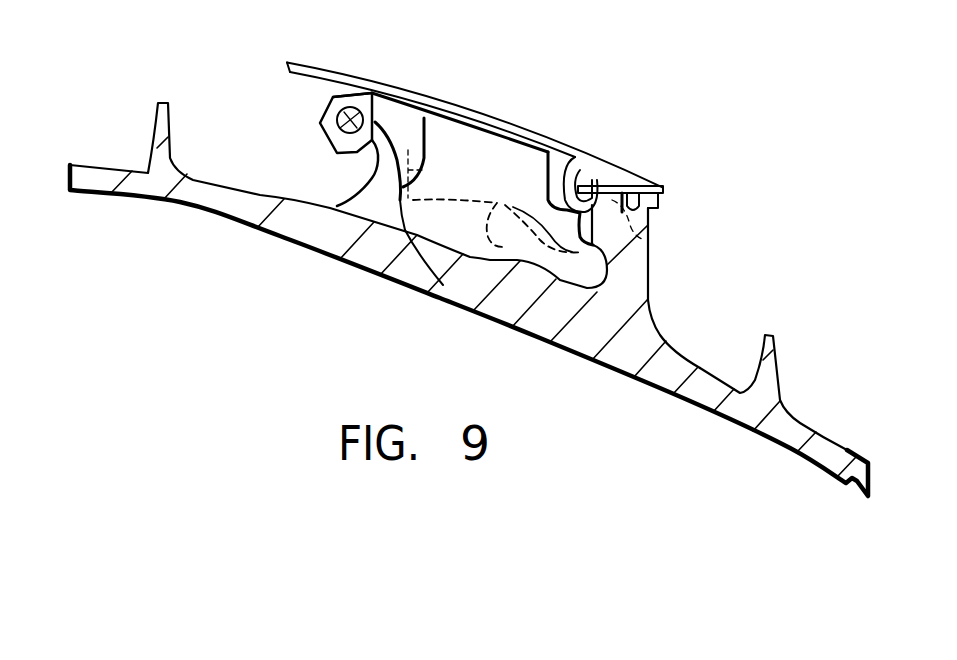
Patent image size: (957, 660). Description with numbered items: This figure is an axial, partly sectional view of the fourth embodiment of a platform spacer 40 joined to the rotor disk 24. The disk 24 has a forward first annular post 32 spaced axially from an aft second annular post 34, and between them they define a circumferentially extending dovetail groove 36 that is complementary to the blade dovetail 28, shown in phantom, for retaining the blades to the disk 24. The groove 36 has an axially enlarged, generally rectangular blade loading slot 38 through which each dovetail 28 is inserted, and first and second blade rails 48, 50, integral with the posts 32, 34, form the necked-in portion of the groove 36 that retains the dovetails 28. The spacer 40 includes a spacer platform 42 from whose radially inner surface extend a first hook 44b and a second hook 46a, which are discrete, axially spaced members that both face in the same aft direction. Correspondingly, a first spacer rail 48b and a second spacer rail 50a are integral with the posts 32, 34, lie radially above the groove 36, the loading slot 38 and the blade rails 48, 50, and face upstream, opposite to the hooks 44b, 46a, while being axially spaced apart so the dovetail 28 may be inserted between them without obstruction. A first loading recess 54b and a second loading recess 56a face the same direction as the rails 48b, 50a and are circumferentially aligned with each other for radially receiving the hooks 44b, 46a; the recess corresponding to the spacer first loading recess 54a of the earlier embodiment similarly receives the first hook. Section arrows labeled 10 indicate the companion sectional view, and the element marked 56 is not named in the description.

The section line 10- 10 is at (235, 113).
The rotor disk 24 is at (392, 283).
The dovetail 28 is at (498, 229).
The first annular post 32 is at (348, 188).
The second annular post 34 is at (650, 283).
The dovetail groove 36 is at (458, 223).
The blade loading slot 38 is at (440, 274).
The spacer 40 is at (475, 116).
The spacer platform 42 is at (445, 95).
The first hook 44b is at (322, 148).
The second hook 46a is at (540, 200).
The first rail 48 is at (422, 147).
The first spacer rail 48b is at (333, 96).
The second rail 50 is at (580, 160).
The second spacer rail 50a is at (610, 185).
The spacer first loading recess 54a is at (437, 157).
The first loading recess 54b is at (340, 122).
The projection 56 is at (657, 261).
The second loading recess 56a is at (652, 232).